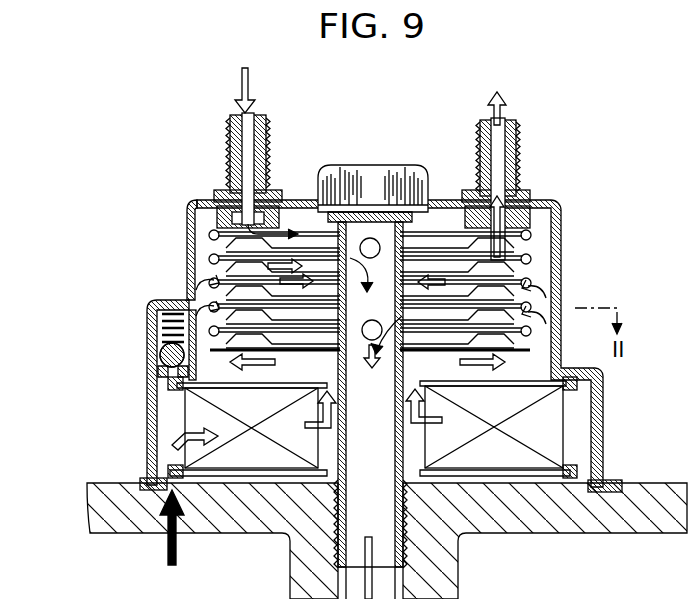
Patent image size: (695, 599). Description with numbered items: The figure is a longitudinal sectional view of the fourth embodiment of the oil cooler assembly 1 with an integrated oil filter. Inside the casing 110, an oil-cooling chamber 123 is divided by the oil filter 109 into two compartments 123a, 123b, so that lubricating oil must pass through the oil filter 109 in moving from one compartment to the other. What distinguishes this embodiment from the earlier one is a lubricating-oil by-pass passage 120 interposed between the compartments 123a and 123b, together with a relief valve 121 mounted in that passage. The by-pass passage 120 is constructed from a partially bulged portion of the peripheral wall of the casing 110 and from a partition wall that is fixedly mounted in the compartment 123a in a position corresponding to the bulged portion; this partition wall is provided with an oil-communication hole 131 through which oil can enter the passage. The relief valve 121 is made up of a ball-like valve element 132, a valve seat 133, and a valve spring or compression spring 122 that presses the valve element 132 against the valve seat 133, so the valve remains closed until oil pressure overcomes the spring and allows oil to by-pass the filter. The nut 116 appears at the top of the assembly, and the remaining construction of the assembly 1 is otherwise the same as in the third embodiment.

The oil cooler assembly 1 is at (568, 212).
The oil filter 109 is at (165, 412).
The casing 110 is at (190, 258).
The nut 116 is at (422, 182).
The lubricating-oil by-pass passage 120 is at (148, 363).
The relief valve 121 is at (98, 355).
The valve spring 122 is at (150, 308).
The oil-cooling chamber 123 is at (206, 268).
The compartment 123a is at (162, 442).
The compartment 123b is at (197, 226).
The oil-communication hole 131 is at (170, 330).
The ball-like valve element 132 is at (162, 353).
The valve seat 133 is at (148, 373).